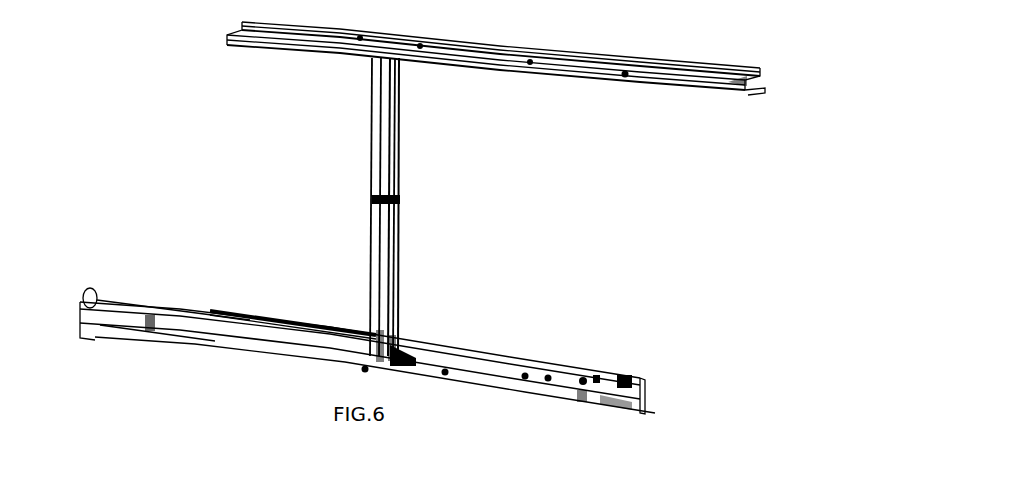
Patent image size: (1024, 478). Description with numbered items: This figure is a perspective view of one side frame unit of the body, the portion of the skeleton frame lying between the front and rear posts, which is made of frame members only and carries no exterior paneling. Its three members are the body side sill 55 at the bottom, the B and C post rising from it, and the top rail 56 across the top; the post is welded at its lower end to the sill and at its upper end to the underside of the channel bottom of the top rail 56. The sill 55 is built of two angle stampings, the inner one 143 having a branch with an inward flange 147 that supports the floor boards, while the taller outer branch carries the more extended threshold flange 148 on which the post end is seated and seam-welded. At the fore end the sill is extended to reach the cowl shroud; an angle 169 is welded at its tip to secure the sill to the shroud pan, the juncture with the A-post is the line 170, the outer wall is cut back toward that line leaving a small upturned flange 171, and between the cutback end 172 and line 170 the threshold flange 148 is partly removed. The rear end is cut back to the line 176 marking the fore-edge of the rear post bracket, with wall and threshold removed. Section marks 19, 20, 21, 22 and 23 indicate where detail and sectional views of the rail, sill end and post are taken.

The top rail 56 is at (545, 72).
The body side sill 55 is at (442, 377).
The threshold flange 148 is at (412, 363).
The floorboard flange 147 is at (633, 380).
The inner angle stamping 143 is at (638, 405).
The cut-back line 176 is at (588, 404).
The angle 169 is at (87, 298).
The juncture line 170 is at (215, 312).
The upturned flange 171 is at (115, 327).
The end of cutback 172 is at (148, 315).
The section line 19- 19 is at (357, 118).
The section line 20- 20 is at (292, 65).
The section line 21- 21 is at (155, 350).
The section line 22- 22 is at (232, 368).
The section line 23- 23 is at (597, 425).